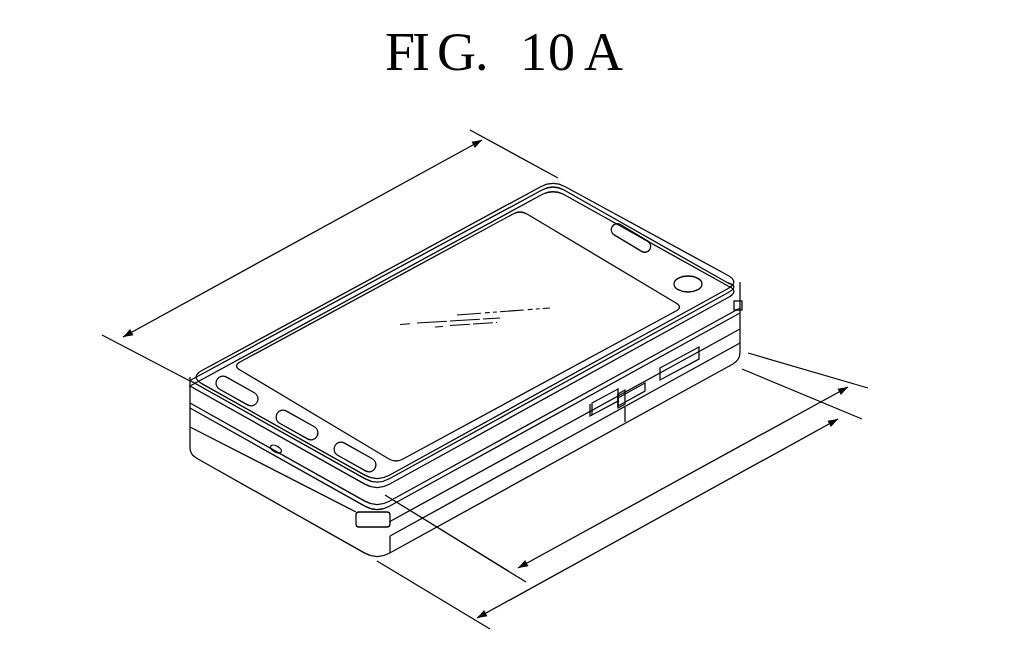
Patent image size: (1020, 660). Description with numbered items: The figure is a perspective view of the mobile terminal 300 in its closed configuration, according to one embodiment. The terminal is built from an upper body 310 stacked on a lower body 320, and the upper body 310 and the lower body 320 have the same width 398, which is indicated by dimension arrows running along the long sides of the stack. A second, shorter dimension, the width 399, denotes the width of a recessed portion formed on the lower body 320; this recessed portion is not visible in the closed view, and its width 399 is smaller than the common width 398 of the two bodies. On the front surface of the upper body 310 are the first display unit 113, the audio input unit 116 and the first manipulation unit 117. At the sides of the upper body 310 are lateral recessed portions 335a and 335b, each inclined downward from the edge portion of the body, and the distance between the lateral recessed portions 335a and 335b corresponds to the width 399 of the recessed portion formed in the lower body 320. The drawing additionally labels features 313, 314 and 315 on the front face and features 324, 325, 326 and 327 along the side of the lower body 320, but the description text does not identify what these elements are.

The mobile terminal 300 is at (721, 179).
The upper body 310 is at (752, 286).
The lower body 320 is at (751, 341).
The display unit 313 is at (567, 213).
The audio output module 314 is at (633, 235).
The camera 315 is at (688, 280).
The first manipulation unit 117 is at (231, 386).
The first display unit 113 is at (333, 388).
The audio input unit 116 is at (276, 453).
The side key 324 is at (632, 392).
The side key 325 is at (684, 364).
The side surface of rear case 326 is at (493, 489).
The corner step of rear case 327 is at (358, 546).
The lateral recessed portion 335a is at (368, 519).
The lateral recessed portion 335b is at (743, 304).
The width 398 is at (297, 242).
The width 399 is at (663, 489).